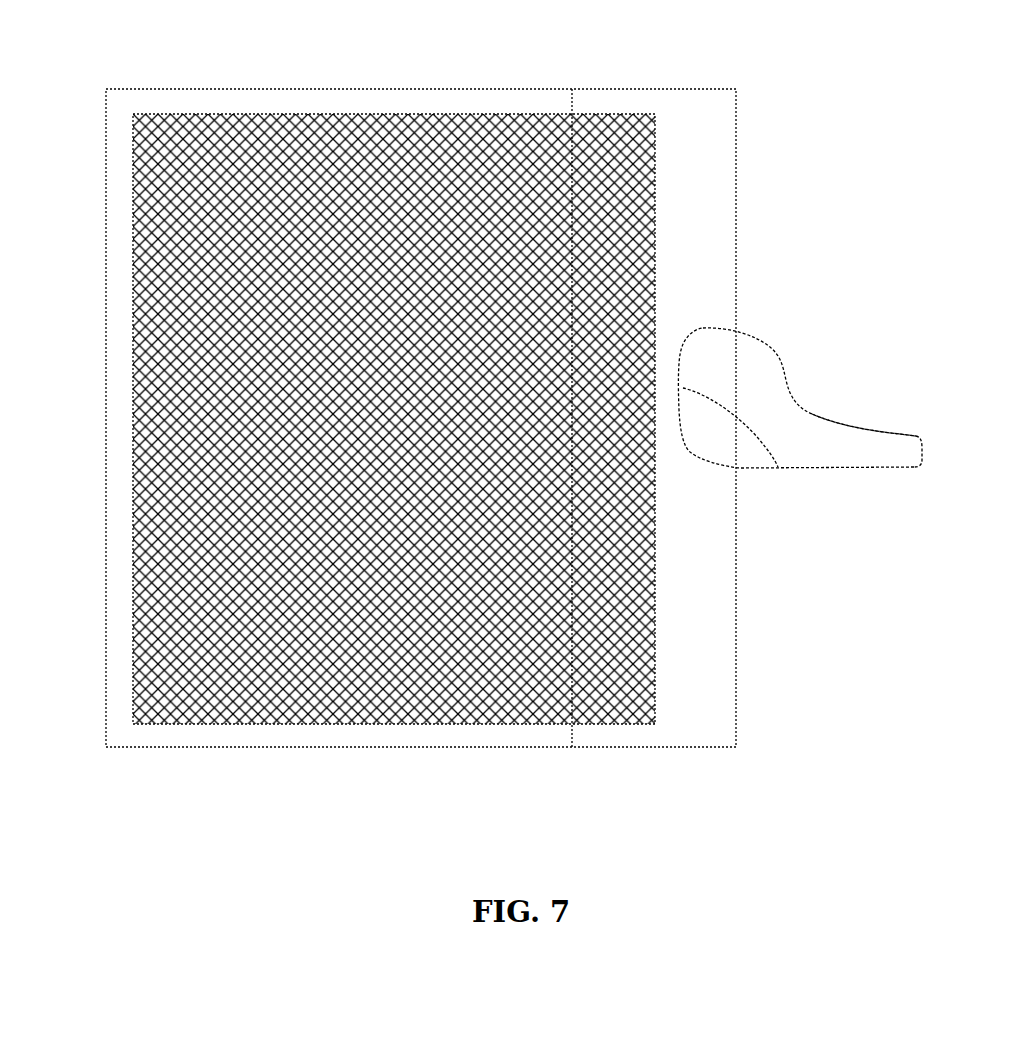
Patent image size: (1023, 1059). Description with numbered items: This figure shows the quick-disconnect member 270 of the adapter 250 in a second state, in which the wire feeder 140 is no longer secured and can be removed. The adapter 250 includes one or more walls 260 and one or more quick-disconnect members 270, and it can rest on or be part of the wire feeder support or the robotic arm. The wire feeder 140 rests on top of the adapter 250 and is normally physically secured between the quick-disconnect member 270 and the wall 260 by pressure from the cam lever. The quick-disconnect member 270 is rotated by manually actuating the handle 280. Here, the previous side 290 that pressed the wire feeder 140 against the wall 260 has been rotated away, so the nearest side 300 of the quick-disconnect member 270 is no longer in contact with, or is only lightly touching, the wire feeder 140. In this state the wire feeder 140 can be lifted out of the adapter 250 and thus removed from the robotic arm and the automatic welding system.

The adapter 250 is at (556, 56).
The wall 260 is at (127, 515).
The wire feeder 140 is at (267, 725).
The side of the quick-disconnect member 290 is at (714, 327).
The quick-disconnect member 270 is at (850, 430).
The handle 280 is at (922, 447).
The nearest side of the quick-disconnect member 300 is at (778, 467).